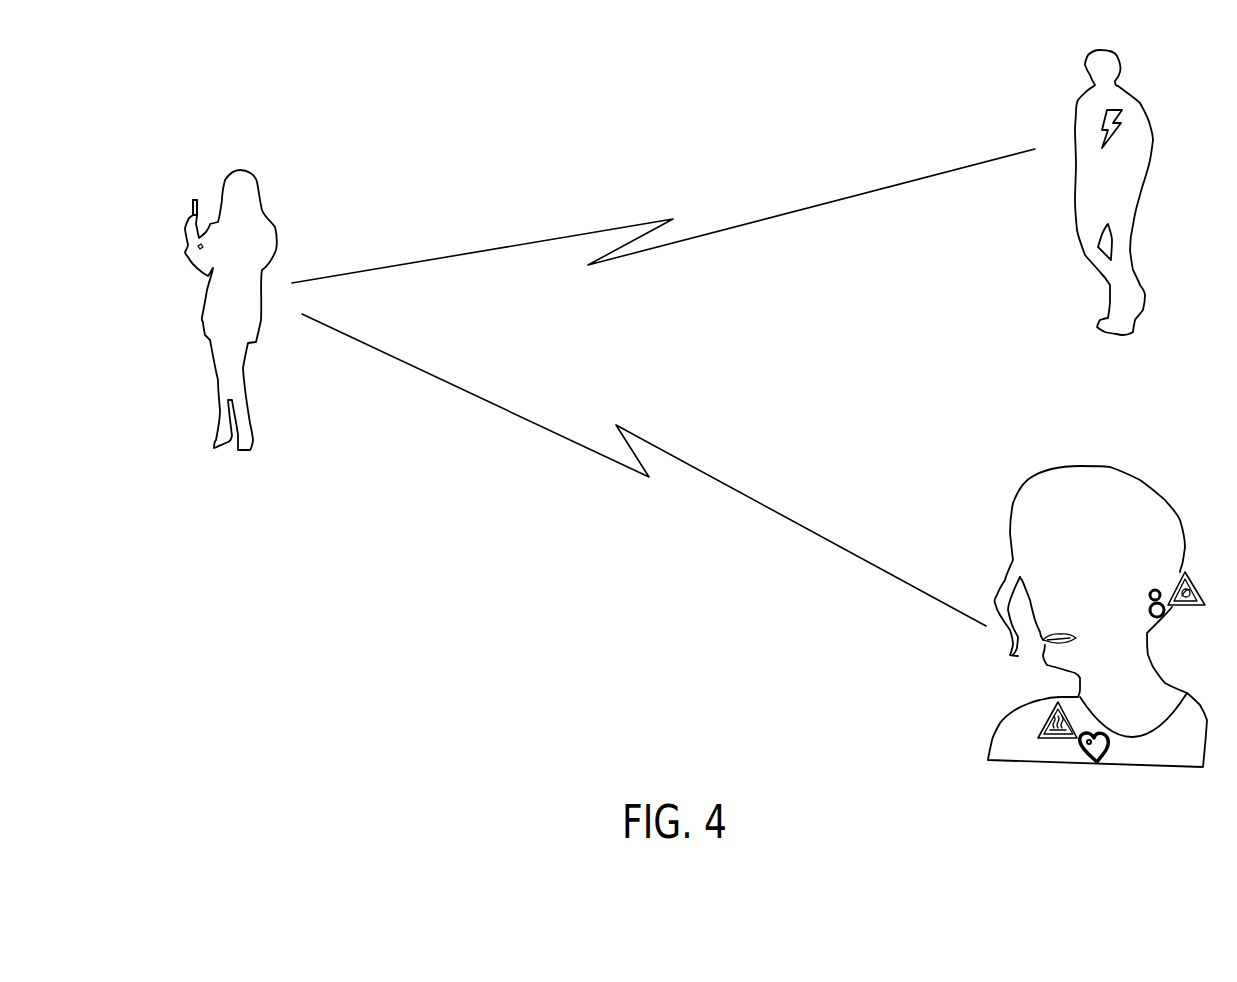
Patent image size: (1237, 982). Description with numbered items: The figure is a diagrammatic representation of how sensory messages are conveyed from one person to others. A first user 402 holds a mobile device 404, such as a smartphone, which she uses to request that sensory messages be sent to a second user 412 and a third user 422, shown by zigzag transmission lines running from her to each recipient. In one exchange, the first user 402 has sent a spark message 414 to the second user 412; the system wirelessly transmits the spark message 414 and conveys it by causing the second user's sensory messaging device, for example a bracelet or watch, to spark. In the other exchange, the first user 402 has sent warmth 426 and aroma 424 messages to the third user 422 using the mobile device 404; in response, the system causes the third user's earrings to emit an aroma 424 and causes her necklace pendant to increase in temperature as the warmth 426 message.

The first user 402 is at (254, 196).
The mobile device 404 is at (193, 212).
The second user 412 is at (1112, 70).
The spark message 414 is at (1102, 118).
The third user 422 is at (1136, 486).
The aroma message 424 is at (1098, 753).
The warmth message 426 is at (1167, 613).